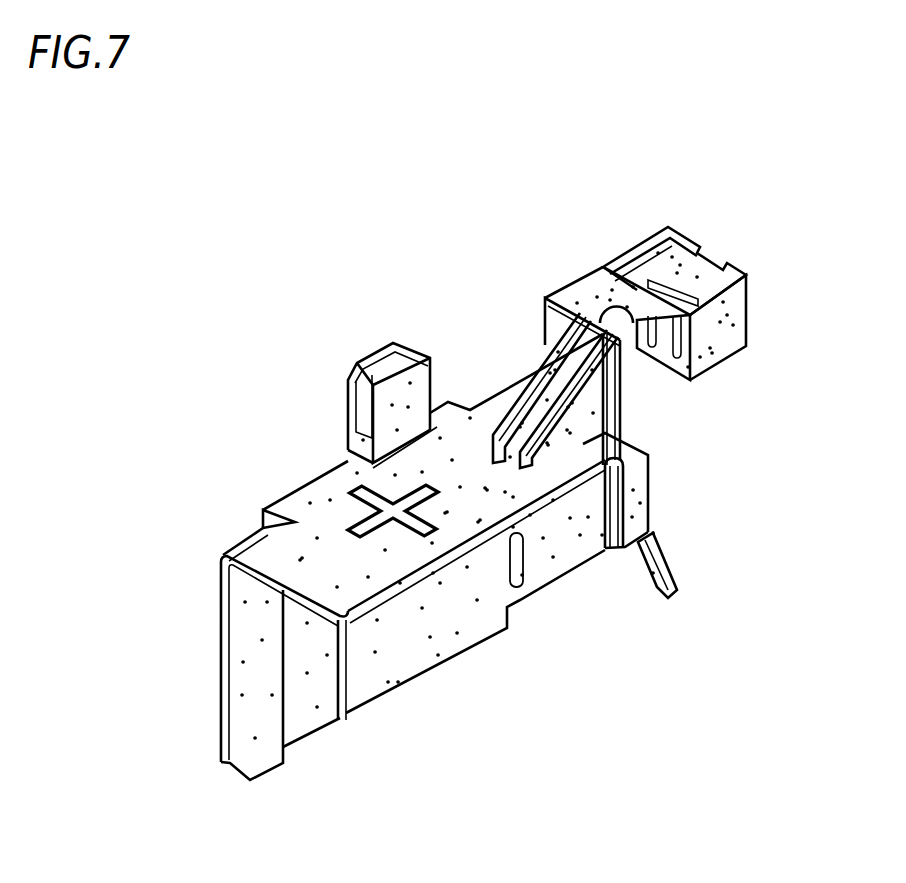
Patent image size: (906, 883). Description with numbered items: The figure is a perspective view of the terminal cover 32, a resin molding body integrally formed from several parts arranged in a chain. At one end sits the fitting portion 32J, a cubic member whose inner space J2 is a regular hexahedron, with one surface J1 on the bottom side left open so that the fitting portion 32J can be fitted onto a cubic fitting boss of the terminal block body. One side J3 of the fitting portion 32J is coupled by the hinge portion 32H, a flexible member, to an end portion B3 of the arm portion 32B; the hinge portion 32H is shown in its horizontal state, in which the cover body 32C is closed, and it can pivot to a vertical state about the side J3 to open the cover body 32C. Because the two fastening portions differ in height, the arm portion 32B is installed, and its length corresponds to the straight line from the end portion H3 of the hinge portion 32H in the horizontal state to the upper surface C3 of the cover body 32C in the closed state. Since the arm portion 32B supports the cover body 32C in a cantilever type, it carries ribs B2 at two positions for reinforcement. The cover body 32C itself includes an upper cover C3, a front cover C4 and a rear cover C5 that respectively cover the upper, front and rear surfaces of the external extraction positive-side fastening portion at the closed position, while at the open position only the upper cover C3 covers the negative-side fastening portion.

The terminal cover 32 is at (438, 104).
The cover body 32C is at (333, 487).
The arm portion 32B is at (543, 328).
The ribs B2 is at (548, 395).
The end portion of the arm portion B3 is at (593, 297).
The hinge portion 32H is at (572, 303).
The end portion of the hinge portion H3 is at (627, 312).
The fitting portion 32J is at (683, 257).
The opened surface of the fitting portion J1 is at (715, 372).
The inner space of the fitting portion J2 is at (748, 297).
The side of the fitting portion J3 is at (611, 273).
The upper cover C3 is at (277, 562).
The front cover C4 is at (220, 682).
The rear cover C5 is at (367, 687).